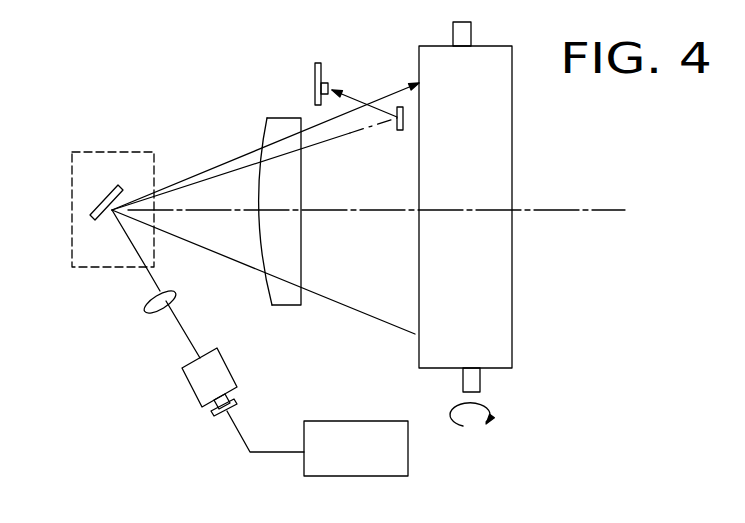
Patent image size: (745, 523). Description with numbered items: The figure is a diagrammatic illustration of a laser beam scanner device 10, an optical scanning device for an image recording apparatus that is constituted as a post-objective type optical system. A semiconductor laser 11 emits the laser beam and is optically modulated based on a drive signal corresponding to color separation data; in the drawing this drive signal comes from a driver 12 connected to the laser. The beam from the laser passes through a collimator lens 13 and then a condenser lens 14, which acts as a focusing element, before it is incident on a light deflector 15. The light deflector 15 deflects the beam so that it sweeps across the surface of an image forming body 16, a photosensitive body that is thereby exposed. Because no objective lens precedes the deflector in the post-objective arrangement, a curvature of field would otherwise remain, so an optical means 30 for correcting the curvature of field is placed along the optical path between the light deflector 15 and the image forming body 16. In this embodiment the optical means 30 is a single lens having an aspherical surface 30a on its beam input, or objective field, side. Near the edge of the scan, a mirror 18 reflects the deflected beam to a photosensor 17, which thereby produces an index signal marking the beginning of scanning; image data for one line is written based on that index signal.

The laser beam scanner device 10 is at (116, 45).
The semiconductor laser 11 is at (212, 406).
The driver 12 is at (408, 452).
The collimator lens 13 is at (183, 376).
The condenser lens 14 is at (152, 311).
The light deflector 15 is at (68, 200).
The image forming body 16 is at (513, 160).
The photosensor 17 is at (325, 90).
The mirror 18 is at (399, 130).
The optical means 30 is at (277, 117).
The aspherical surface 30a is at (268, 284).